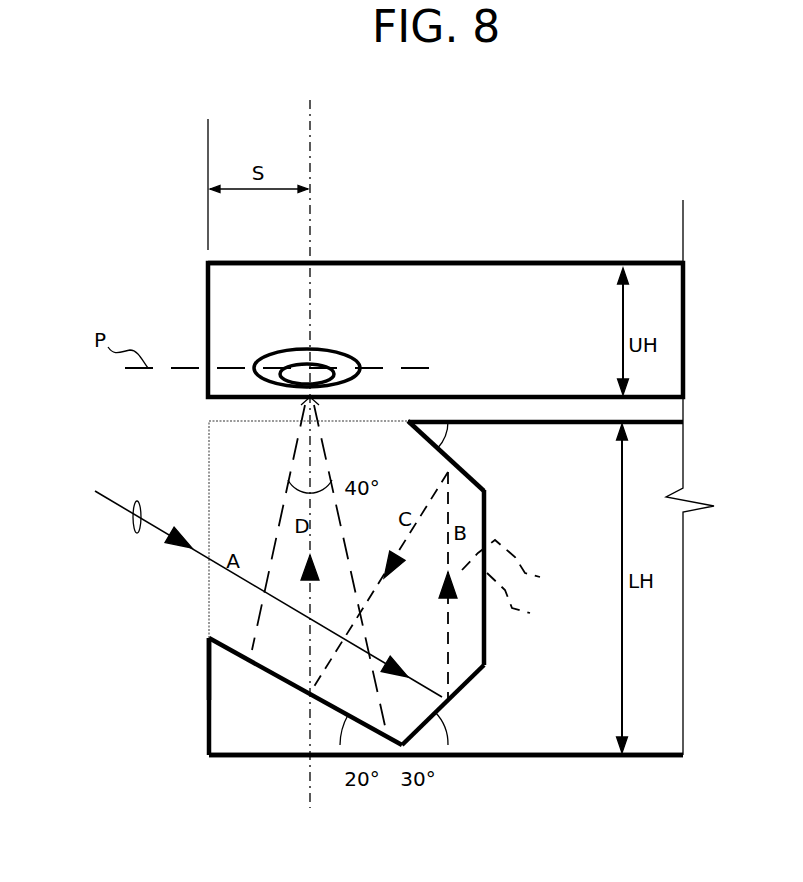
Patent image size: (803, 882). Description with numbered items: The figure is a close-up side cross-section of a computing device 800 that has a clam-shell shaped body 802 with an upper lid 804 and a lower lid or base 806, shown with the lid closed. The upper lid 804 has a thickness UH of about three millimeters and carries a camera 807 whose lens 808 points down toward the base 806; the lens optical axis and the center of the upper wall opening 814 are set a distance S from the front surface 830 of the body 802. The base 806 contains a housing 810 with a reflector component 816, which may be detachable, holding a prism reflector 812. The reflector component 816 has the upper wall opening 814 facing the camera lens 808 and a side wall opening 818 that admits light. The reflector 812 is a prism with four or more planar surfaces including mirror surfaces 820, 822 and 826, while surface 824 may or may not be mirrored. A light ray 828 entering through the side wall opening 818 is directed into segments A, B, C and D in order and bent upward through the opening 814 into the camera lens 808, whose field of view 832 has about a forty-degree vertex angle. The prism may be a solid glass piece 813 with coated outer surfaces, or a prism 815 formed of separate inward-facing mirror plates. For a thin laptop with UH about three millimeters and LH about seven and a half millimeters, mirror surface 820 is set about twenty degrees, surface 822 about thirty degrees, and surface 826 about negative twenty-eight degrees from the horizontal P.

The computing device 800 is at (514, 124).
The clam-shell shaped body 802 is at (340, 263).
The upper lid 804 is at (455, 263).
The lower lid (base) 806 is at (647, 737).
The camera 807 is at (280, 352).
The lens 808 is at (282, 372).
The housing 810 is at (600, 757).
The prism reflector 812 is at (260, 663).
The solid piece prism 813 is at (520, 565).
The upper wall opening 814 is at (281, 418).
The prism (pentamirror) 815 is at (528, 599).
The reflector component 816 is at (208, 656).
The side wall opening 818 is at (208, 632).
The mirror surface 820 is at (292, 688).
The mirror surface 822 is at (460, 692).
The surface 824 is at (485, 634).
The mirror surface 826 is at (468, 470).
The light ray 828 is at (137, 500).
The front surface 830 is at (205, 283).
The FOV 832 is at (278, 527).